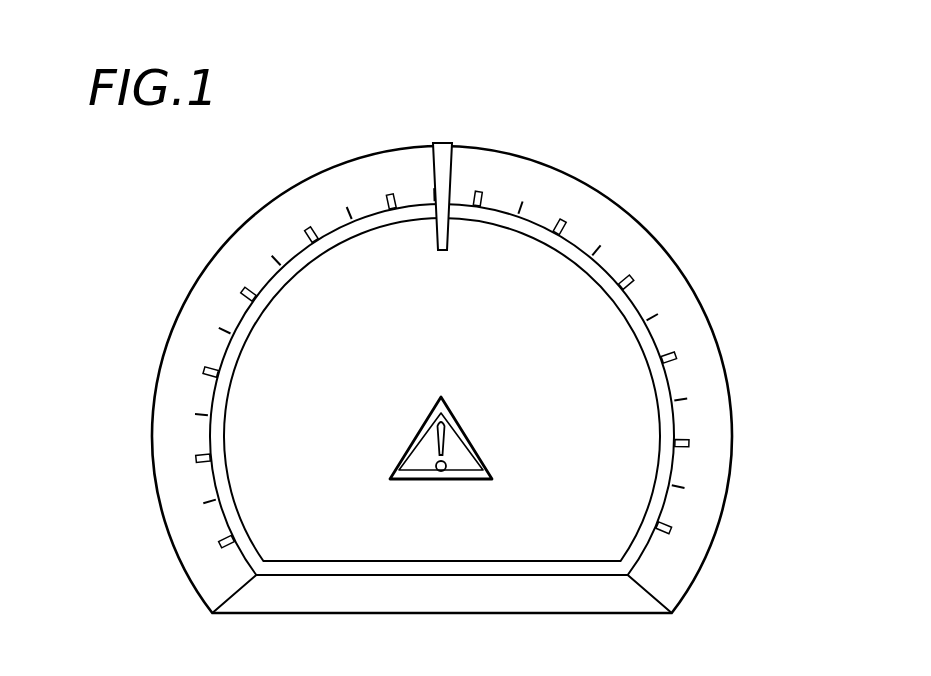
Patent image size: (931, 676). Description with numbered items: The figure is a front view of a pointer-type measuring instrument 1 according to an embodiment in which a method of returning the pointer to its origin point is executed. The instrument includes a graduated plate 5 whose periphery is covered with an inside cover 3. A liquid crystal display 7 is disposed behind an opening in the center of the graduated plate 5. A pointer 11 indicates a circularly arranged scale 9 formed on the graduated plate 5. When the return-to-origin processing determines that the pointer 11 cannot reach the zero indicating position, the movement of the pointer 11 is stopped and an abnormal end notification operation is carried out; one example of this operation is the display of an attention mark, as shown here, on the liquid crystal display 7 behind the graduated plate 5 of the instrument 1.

The pointer-type measuring instrument 1 is at (172, 236).
The inside cover 3 is at (765, 205).
The graduated plate 5 is at (552, 186).
The liquid crystal display 7 is at (635, 455).
The scale 9 is at (686, 321).
The pointer 11 is at (441, 158).